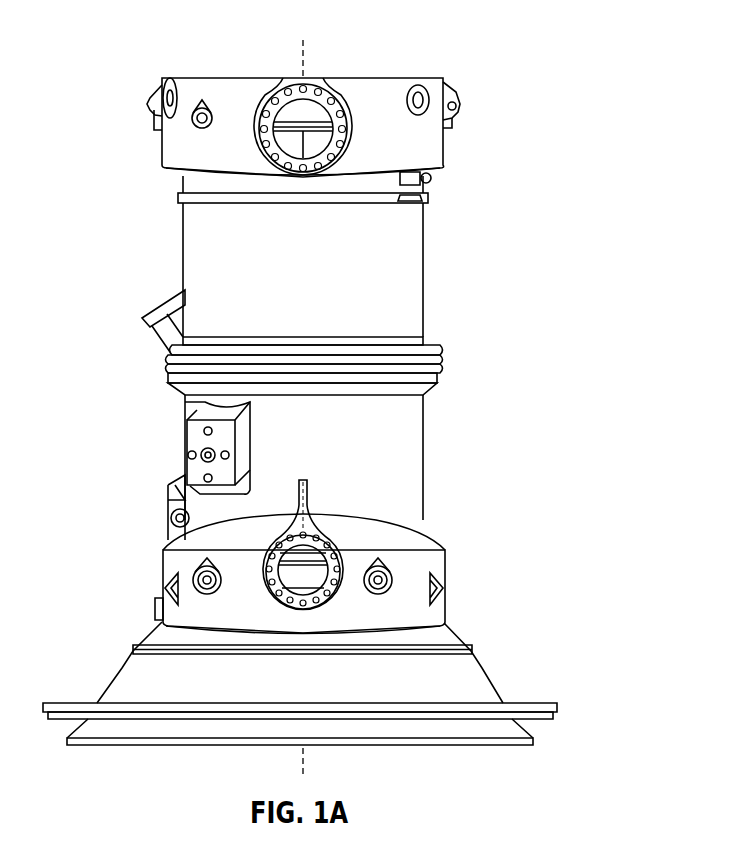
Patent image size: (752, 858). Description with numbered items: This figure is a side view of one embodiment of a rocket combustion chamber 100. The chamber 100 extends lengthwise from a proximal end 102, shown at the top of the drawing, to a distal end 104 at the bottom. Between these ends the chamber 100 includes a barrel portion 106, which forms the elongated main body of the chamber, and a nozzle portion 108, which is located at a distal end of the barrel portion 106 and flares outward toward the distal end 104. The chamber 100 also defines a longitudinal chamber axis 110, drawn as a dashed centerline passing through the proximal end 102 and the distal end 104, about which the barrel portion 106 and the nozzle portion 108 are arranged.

The rocket combustion chamber 100 is at (516, 34).
The proximal end 102 is at (415, 78).
The distal end 104 is at (445, 745).
The barrel portion 106 is at (405, 230).
The nozzle portion 108 is at (455, 682).
The longitudinal chamber axis 110 is at (308, 70).